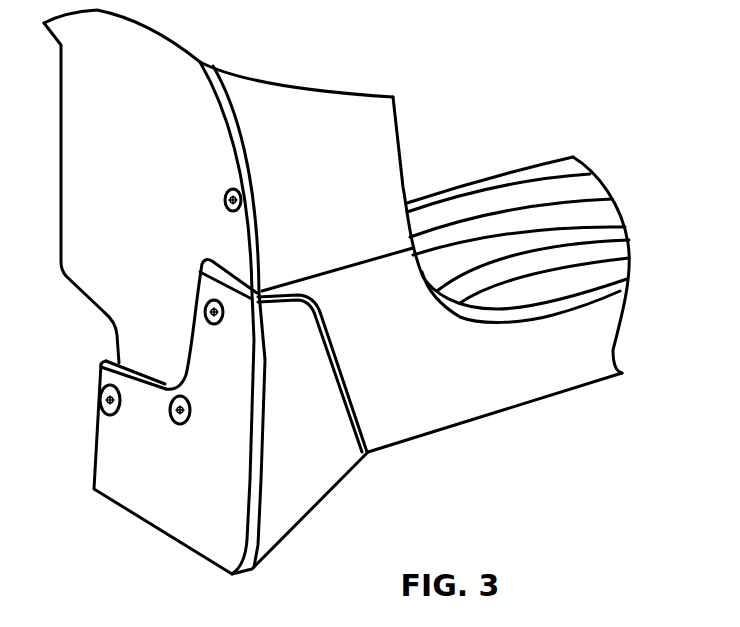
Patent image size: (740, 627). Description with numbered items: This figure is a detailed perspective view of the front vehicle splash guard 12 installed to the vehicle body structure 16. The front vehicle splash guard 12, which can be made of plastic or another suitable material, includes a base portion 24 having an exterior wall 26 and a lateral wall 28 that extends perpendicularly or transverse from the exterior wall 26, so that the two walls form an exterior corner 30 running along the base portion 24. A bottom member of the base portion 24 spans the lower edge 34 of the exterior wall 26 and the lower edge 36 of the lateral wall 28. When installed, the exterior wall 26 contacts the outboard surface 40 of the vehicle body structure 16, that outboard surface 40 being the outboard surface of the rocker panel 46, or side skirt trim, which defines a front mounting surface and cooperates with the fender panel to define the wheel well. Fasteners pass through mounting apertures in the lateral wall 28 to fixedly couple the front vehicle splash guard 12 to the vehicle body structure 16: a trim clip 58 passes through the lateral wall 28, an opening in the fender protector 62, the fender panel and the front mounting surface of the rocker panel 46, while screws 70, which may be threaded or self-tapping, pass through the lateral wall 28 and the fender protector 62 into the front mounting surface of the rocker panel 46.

The front vehicle splash guard 12 is at (360, 292).
The vehicle body structure 16 is at (547, 259).
The base portion 24 is at (236, 318).
The exterior wall 26 is at (302, 365).
The lateral wall 28 is at (218, 357).
The exterior corner 30 is at (257, 416).
The lower edge of the exterior wall 34 is at (297, 532).
The lower edge of the lateral wall 36 is at (148, 532).
The outboard surface 40 is at (470, 377).
The rocker panel 46 is at (557, 356).
The trim clip 58 is at (203, 312).
The fender protector 62 is at (103, 170).
The screw 70 is at (222, 208).